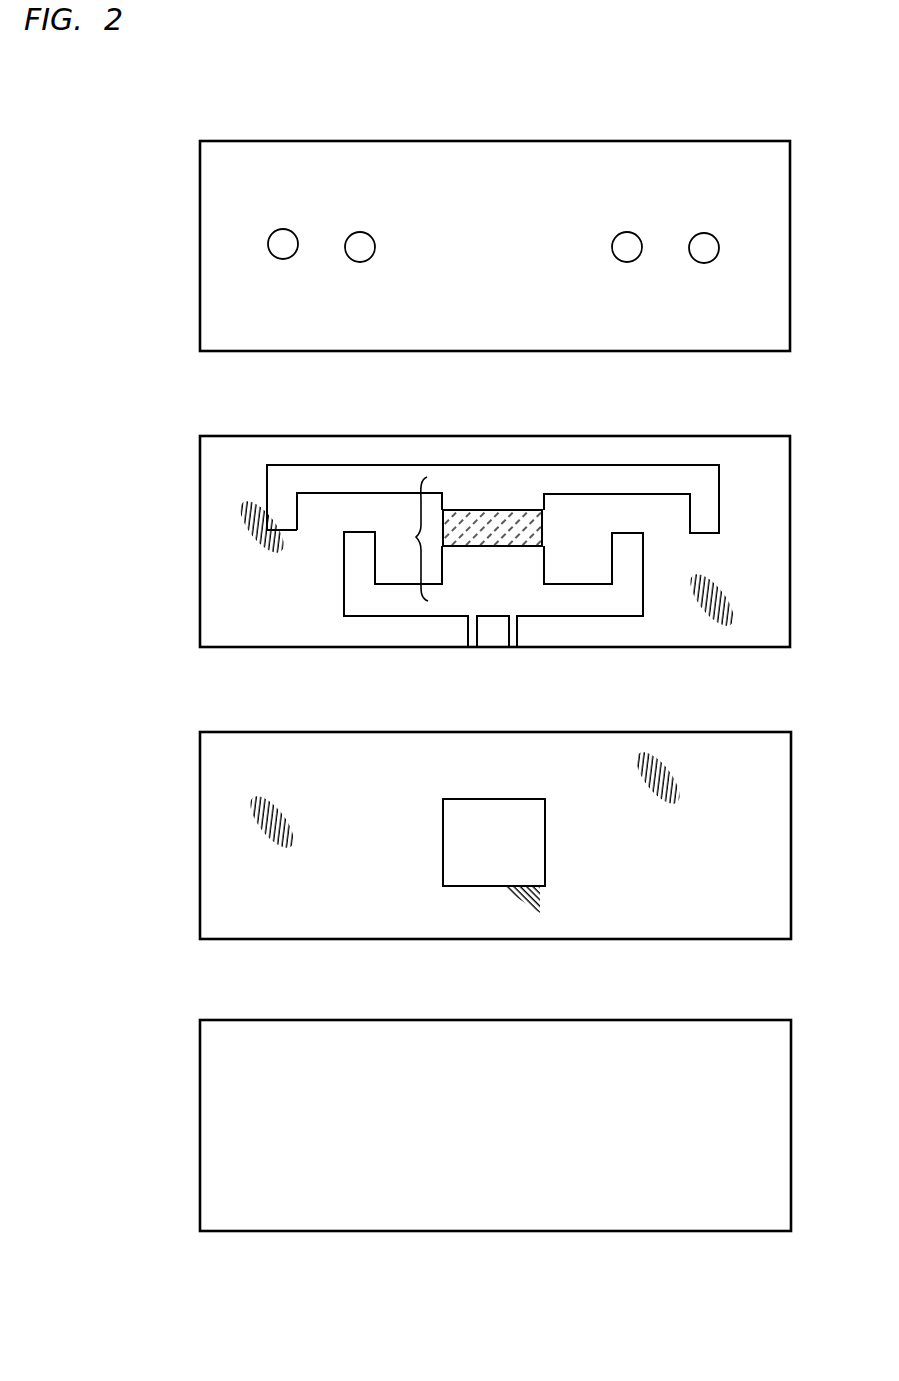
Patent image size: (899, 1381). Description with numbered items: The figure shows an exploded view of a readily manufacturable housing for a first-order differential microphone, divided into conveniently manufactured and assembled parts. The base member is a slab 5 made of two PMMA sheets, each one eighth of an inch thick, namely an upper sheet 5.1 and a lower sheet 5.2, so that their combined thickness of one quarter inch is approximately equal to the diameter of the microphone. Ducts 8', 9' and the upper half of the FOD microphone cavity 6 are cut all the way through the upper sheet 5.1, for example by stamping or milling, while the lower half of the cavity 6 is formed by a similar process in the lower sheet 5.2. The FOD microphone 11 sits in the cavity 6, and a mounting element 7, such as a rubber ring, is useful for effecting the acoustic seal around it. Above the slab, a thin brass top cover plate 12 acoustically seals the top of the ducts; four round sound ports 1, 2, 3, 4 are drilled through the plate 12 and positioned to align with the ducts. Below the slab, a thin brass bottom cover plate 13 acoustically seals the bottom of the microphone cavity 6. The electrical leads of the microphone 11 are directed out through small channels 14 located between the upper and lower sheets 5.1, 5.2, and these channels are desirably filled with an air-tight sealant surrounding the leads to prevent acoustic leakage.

The sound port 1 is at (297, 239).
The sound port 2 is at (374, 242).
The sound port 3 is at (641, 242).
The sound port 4 is at (718, 242).
The slab 5 is at (172, 415).
The upper sheet 5.1 is at (790, 492).
The lower sheet 5.2 is at (791, 787).
The FOD microphone cavity 6 is at (444, 828).
The mounting element 7 is at (543, 525).
The duct 8' is at (493, 486).
The duct 9' is at (493, 589).
The FOD microphone 11 is at (520, 510).
The top cover plate 12 is at (790, 197).
The bottom cover plate 13 is at (791, 1077).
The channels 14 is at (508, 547).